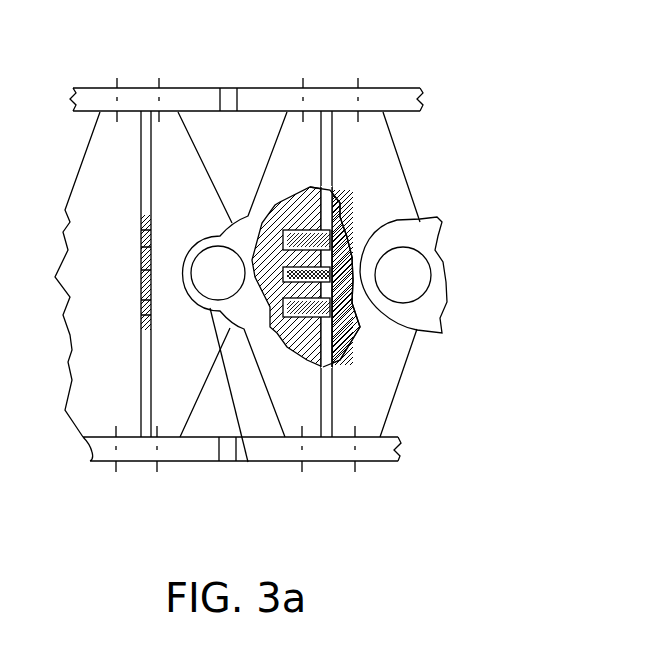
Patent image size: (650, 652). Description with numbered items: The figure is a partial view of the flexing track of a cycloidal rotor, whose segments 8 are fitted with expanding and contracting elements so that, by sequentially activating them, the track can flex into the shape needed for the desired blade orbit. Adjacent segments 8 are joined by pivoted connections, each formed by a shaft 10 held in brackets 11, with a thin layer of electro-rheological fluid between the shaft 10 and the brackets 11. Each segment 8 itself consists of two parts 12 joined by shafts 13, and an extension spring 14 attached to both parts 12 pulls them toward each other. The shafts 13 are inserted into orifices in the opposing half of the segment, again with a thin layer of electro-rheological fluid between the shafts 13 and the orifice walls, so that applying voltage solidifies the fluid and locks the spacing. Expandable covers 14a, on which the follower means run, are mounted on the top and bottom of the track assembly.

The segment 8 is at (377, 420).
The shaft 10 is at (408, 257).
The bracket 11 is at (248, 462).
The part of the segment 12 is at (355, 118).
The shaft 13 is at (141, 212).
The extension spring 14 is at (353, 262).
The expandable cover 14a is at (194, 99).